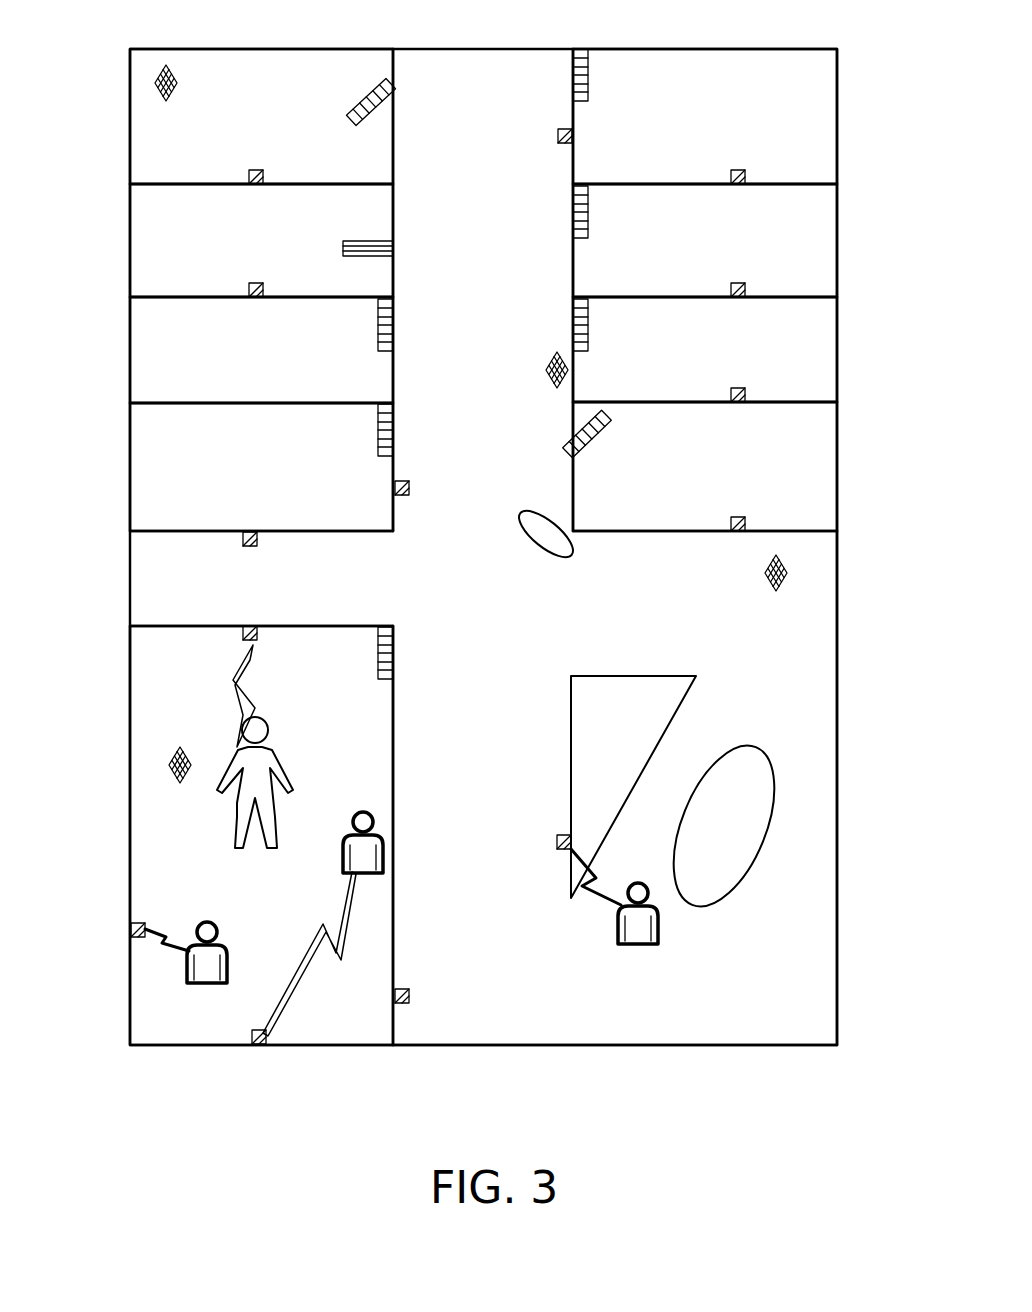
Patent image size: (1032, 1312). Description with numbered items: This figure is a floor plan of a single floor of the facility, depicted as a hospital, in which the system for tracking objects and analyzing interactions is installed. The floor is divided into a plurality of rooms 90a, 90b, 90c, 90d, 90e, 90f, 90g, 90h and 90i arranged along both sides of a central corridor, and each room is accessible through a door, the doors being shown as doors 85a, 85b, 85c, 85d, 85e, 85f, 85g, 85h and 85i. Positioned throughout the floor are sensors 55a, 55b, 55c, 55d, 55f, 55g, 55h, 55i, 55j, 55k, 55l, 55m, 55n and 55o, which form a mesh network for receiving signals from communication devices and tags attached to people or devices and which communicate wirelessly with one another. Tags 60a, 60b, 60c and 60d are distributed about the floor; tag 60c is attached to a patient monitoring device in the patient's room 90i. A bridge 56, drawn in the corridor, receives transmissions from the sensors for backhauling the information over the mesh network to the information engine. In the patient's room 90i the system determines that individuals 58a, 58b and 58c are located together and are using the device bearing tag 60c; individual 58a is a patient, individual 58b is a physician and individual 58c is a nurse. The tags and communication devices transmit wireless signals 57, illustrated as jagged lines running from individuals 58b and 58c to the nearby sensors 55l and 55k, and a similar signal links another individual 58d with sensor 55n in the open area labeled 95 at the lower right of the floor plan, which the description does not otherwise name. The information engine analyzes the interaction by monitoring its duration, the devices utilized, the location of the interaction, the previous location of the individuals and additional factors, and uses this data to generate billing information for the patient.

The sensor 55a is at (252, 170).
The sensor 55b is at (738, 170).
The sensor 55c is at (252, 283).
The sensor 55d is at (738, 283).
The sensor 55f is at (738, 388).
The sensor 55g is at (246, 539).
The sensor 55h is at (738, 517).
The sensor 55i is at (246, 630).
The sensor 55j is at (394, 485).
The sensor 55k is at (131, 925).
The sensor 55l is at (254, 1030).
The sensor 55m is at (403, 1003).
The sensor 55n is at (557, 845).
The sensor 55o is at (557, 130).
The bridge 56 is at (573, 556).
The wireless signals 57 is at (308, 943).
The individual 58a is at (272, 848).
The individual 58b is at (345, 835).
The individual 58c is at (200, 983).
The individual 58d is at (626, 944).
The tag 60a is at (155, 82).
The tag 60b is at (548, 364).
The tag 60c is at (172, 762).
The tag 60d is at (778, 590).
The door 85a is at (374, 84).
The door 85b is at (590, 60).
The door 85c is at (349, 242).
The door 85d is at (588, 206).
The door 85e is at (378, 326).
The door 85f is at (588, 316).
The door 85g is at (378, 440).
The door 85h is at (608, 413).
The door 85i is at (383, 626).
The room 90a is at (259, 72).
The room 90b is at (806, 93).
The room 90c is at (150, 208).
The room 90d is at (803, 243).
The room 90e is at (166, 338).
The room 90f is at (800, 353).
The room 90g is at (157, 441).
The room 90h is at (798, 473).
The room 90i is at (152, 825).
The open area 95 is at (790, 718).